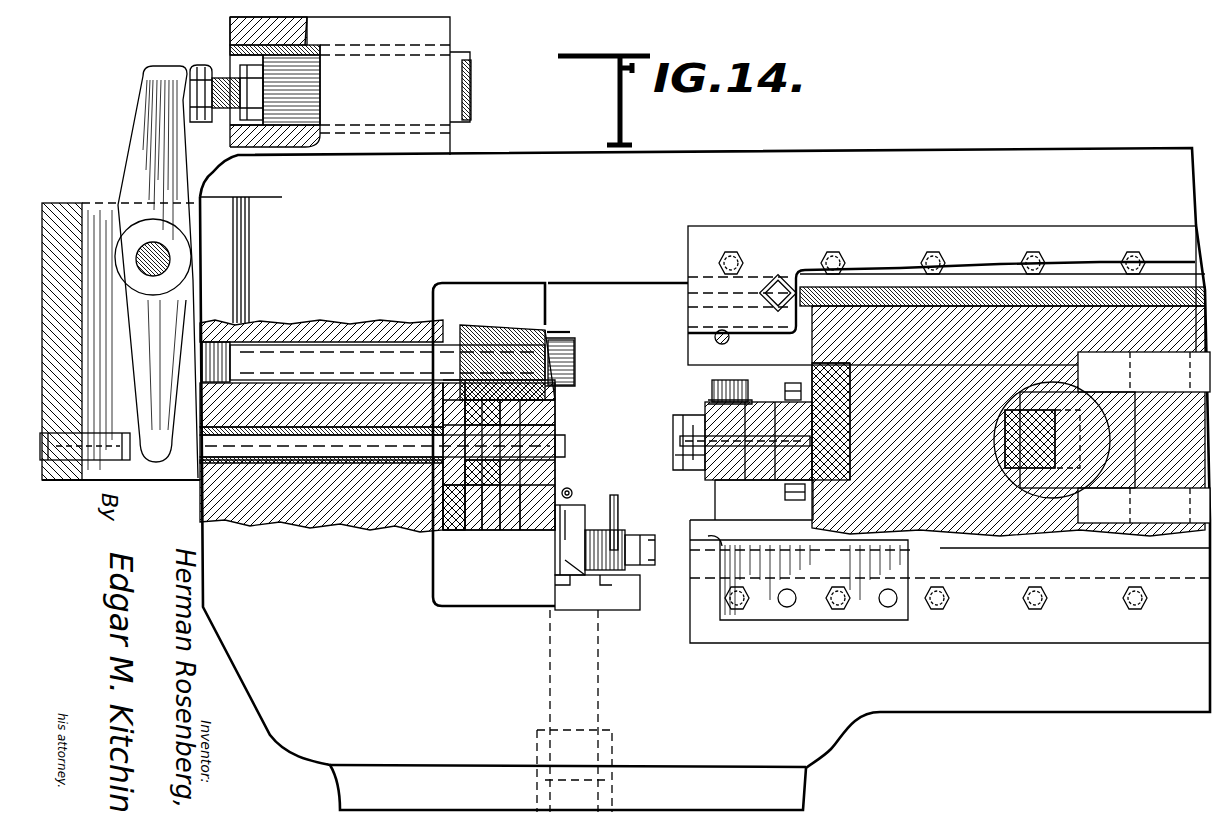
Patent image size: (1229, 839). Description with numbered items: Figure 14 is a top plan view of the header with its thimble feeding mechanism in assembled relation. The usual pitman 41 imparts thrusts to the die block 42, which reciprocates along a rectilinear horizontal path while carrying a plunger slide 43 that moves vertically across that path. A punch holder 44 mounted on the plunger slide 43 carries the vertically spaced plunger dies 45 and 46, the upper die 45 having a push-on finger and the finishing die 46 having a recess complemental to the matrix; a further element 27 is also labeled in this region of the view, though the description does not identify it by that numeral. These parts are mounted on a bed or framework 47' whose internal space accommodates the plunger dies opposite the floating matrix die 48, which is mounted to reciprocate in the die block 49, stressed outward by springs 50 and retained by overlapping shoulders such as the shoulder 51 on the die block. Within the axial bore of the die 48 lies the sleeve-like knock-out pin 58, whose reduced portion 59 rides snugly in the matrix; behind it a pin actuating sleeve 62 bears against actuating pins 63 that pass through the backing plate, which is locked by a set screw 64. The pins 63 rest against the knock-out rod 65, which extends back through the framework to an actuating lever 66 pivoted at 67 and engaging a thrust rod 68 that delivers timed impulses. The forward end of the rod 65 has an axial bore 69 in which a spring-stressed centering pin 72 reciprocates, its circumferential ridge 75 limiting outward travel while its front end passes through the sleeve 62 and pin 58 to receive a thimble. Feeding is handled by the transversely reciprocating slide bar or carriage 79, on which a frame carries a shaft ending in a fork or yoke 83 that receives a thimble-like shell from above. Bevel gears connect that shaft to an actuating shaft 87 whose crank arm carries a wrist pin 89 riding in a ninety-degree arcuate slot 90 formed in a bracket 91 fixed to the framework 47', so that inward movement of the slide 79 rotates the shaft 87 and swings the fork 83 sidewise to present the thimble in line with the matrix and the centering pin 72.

The rod 27 is at (690, 440).
The pitman 41 is at (1102, 437).
The die block 42 is at (965, 515).
The plunger slide 43 is at (800, 505).
The punch holder 44 is at (768, 402).
The plunger die 45 is at (686, 413).
The finishing plunger die 46 is at (680, 455).
The bed or framework 47' is at (425, 577).
The matrix die 48 is at (556, 460).
The die block 49 is at (525, 535).
The springs 50 is at (388, 355).
The shoulder 51 is at (558, 405).
The knock-out pin 58 is at (532, 512).
The reduced portion 59 is at (558, 440).
The pin actuating sleeve 62 is at (505, 530).
The actuating pins 63 is at (478, 540).
The set screw 64 is at (462, 530).
The knock-out rod 65 is at (262, 500).
The actuating lever 66 is at (150, 406).
The pivot 67 is at (158, 255).
The thrust rod 68 is at (200, 70).
The axial bore 69 is at (350, 518).
The centering pin 72 is at (440, 520).
The circumferential ridge 75 is at (390, 520).
The slide bar or carriage 79 is at (580, 676).
The fork or yoke 83 is at (578, 483).
The actuating shaft 87 is at (583, 530).
The wrist pin 89 is at (600, 530).
The arcuate slot 90 is at (620, 518).
The bracket 91 is at (618, 500).